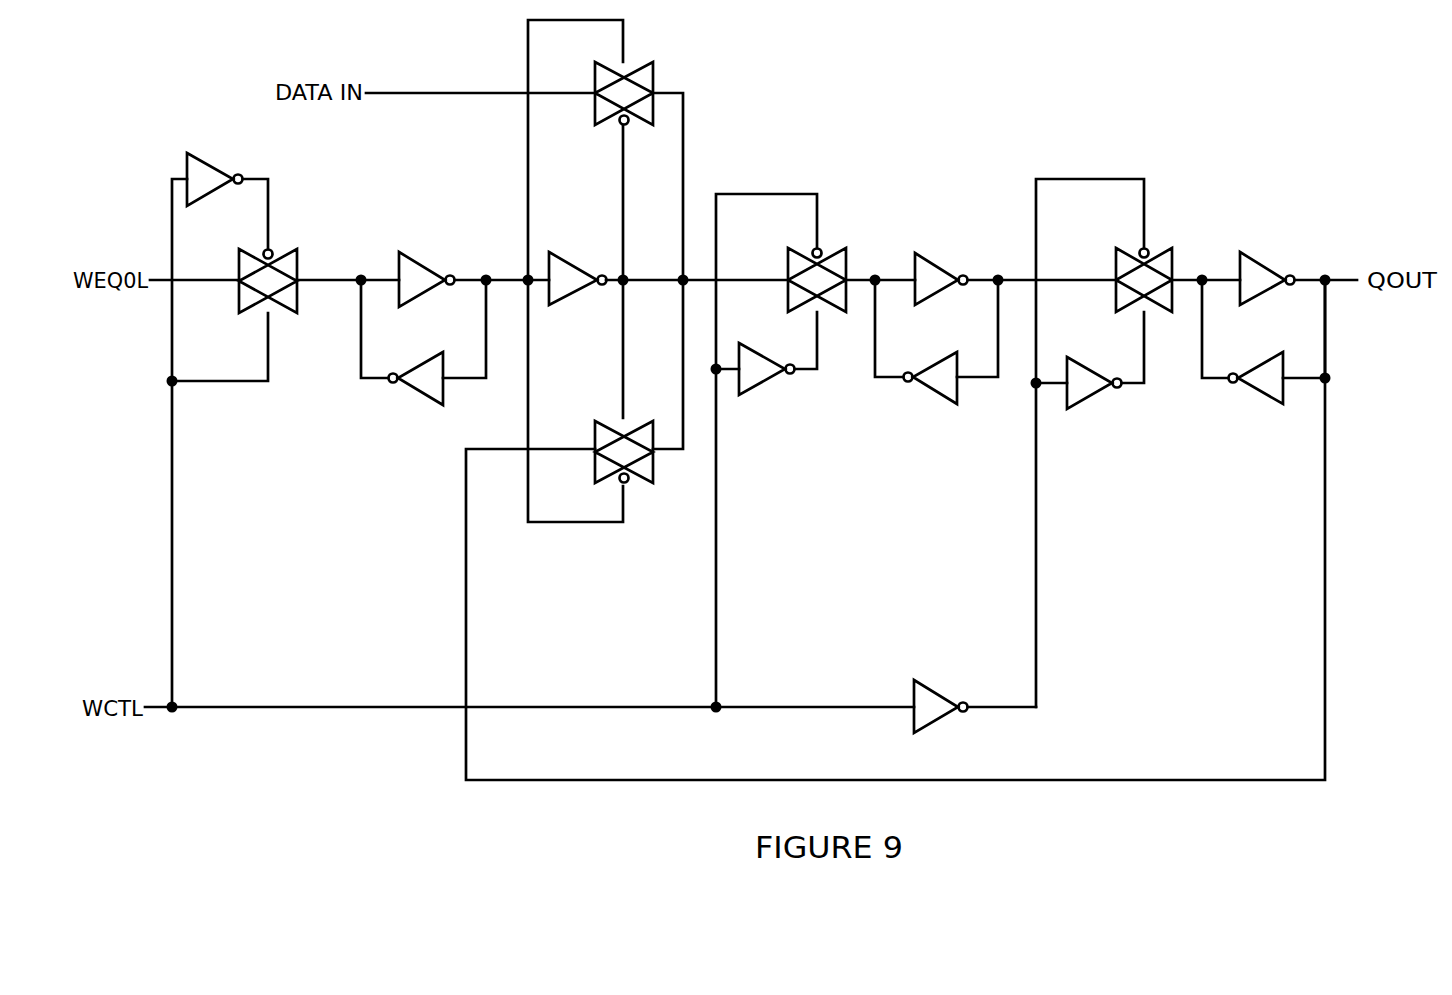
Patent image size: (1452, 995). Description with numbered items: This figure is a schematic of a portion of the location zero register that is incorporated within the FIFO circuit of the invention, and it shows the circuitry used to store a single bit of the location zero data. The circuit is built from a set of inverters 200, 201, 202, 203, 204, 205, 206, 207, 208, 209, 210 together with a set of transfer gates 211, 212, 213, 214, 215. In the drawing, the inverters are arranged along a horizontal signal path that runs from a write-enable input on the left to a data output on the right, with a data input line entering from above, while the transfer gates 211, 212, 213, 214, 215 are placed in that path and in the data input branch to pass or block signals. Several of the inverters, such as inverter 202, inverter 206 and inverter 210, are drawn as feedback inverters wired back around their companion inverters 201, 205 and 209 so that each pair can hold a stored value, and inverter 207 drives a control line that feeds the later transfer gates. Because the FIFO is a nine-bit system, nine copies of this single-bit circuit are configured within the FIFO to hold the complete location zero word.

The inverter 200 is at (202, 172).
The inverter 201 is at (412, 272).
The inverter 202 is at (432, 384).
The inverter 203 is at (567, 272).
The inverter 204 is at (758, 373).
The inverter 205 is at (934, 275).
The inverter 206 is at (931, 383).
The inverter 207 is at (936, 700).
The inverter 208 is at (1083, 386).
The inverter 209 is at (1256, 279).
The inverter 210 is at (1259, 377).
The transfer gate 211 is at (292, 263).
The transfer gate 212 is at (648, 81).
The transfer gate 213 is at (643, 472).
The transfer gate 214 is at (830, 259).
The transfer gate 215 is at (1163, 260).